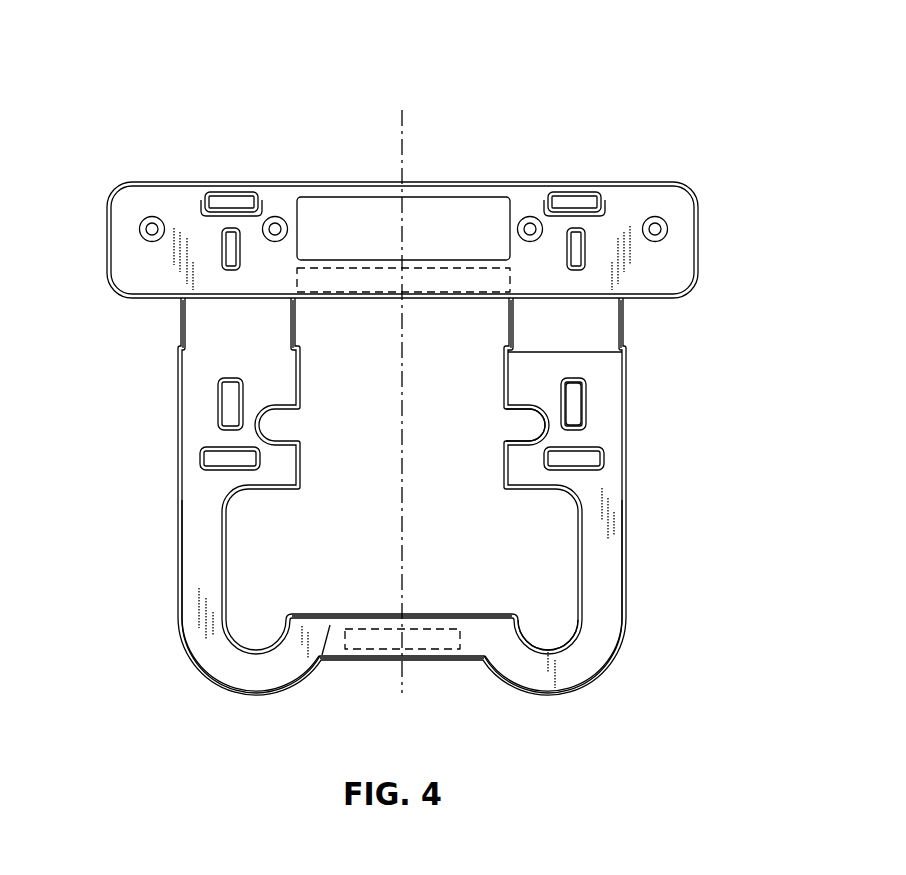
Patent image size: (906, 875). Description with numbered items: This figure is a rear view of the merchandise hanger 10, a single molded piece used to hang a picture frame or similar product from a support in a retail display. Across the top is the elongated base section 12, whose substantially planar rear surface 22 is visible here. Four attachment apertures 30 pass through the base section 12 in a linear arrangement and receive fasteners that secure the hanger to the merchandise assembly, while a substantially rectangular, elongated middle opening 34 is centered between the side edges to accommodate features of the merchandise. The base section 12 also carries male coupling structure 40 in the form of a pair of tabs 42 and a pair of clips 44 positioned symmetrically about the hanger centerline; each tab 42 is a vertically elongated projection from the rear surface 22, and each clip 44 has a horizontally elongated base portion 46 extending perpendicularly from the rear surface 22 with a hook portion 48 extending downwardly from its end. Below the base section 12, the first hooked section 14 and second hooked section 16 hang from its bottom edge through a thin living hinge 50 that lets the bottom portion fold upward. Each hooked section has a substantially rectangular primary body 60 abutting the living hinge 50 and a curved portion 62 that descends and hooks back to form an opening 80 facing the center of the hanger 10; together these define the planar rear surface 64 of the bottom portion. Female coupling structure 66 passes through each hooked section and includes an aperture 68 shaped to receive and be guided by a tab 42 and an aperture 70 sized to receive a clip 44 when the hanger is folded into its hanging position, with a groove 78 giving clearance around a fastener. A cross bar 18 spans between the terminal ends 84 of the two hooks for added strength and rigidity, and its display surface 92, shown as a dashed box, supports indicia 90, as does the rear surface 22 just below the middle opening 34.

The merchandise hanger 10 is at (143, 95).
The base section 12 is at (683, 270).
The first hooked section 14 is at (610, 490).
The second hooked section 16 is at (192, 497).
The cross bar 18 is at (440, 660).
The rear surface 22 is at (683, 206).
The attachment apertures 30 is at (160, 220).
The middle opening 34 is at (420, 205).
The male coupling structure 40 is at (615, 218).
The tabs 42 is at (577, 252).
The clips 44 is at (566, 196).
The base portion 46 is at (232, 193).
The hook portion 48 is at (215, 211).
The living hinge 50 is at (200, 317).
The primary body 60 is at (193, 370).
The curved portion 62 is at (205, 648).
The rear surface 64 is at (203, 562).
The female coupling structure 66 is at (596, 424).
The guide slot or aperture 68 is at (577, 400).
The guide slot or aperture 70 is at (563, 458).
The side slot or groove 78 is at (520, 442).
The opening 80 is at (500, 613).
The terminal ends 84 is at (507, 657).
The indicia 90 is at (338, 268).
The display surface 92 is at (340, 648).